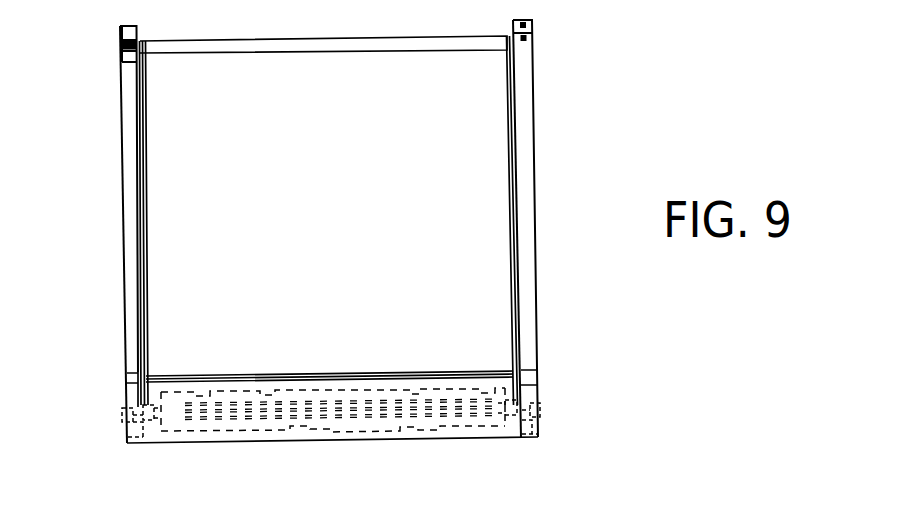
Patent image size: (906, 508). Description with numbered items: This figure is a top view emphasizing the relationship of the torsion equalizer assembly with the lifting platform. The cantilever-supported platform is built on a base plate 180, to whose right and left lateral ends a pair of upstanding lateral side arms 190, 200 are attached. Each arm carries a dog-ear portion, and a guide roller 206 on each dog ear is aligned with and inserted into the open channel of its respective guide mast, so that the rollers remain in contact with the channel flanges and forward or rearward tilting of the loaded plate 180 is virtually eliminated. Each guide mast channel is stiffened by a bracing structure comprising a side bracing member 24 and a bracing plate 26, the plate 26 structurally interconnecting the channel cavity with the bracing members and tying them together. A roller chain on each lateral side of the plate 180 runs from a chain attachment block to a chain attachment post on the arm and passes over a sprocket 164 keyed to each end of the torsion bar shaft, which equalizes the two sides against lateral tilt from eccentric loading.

The upstanding lateral side arm 200 is at (120, 130).
The upstanding lateral side arm 190 is at (528, 182).
The platform base plate 180 is at (362, 187).
The side bracing member 24 is at (138, 373).
The sprocket 164 is at (153, 410).
The guide roller 206 is at (135, 412).
The bracing plate 26 is at (134, 437).